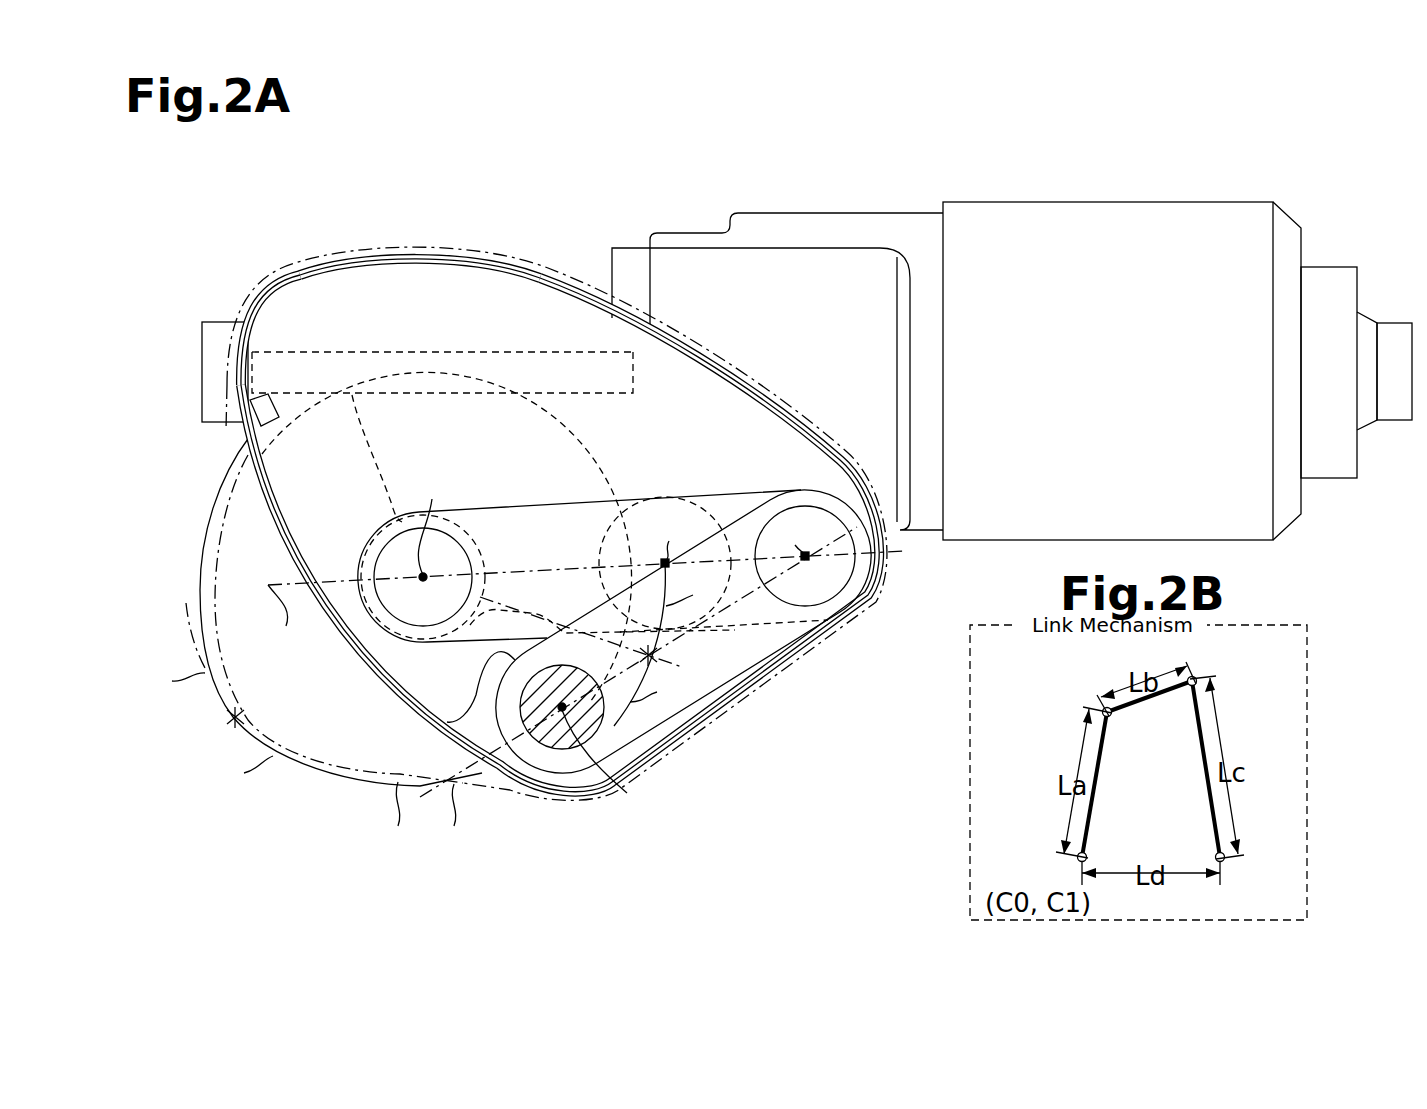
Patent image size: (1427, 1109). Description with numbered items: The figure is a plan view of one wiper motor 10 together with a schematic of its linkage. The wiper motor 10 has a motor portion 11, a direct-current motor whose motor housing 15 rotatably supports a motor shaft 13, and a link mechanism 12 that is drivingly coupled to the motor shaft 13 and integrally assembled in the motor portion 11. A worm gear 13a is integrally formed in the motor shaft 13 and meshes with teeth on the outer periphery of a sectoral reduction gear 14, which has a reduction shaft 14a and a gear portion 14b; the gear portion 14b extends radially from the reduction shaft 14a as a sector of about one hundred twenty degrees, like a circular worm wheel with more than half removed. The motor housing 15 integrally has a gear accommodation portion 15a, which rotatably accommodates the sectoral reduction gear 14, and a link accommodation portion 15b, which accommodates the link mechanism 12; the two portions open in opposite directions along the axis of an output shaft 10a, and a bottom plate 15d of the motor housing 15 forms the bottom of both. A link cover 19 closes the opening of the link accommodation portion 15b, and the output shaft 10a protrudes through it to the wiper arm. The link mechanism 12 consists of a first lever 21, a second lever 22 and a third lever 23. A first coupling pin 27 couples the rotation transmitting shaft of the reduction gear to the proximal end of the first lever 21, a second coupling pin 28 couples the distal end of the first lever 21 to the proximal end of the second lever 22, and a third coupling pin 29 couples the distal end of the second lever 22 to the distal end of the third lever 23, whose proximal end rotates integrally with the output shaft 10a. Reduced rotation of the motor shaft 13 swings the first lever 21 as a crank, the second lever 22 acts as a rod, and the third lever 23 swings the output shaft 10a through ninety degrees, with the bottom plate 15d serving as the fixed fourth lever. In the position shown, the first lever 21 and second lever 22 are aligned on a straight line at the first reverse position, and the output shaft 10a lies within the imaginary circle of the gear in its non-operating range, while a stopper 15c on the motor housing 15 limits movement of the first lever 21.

In FIG. 2A, the wiper motor 10 is at (410, 178).
In FIG. 2A, the output shaft 10a is at (553, 748).
In FIG. 2B, the output shaft 10a is at (1226, 862).
In FIG. 2A, the motor portion 11 is at (1035, 202).
In FIG. 2A, the link mechanism 12 is at (749, 432).
In FIG. 2A, the motor shaft 13 is at (573, 352).
In FIG. 2A, the worm gear 13a is at (402, 352).
In FIG. 2A, the sectoral reduction gear 14 is at (362, 432).
In FIG. 2A, the reduction shaft 14a is at (388, 536).
In FIG. 2A, the gear portion 14b is at (582, 434).
In FIG. 2A, the motor housing 15 is at (539, 501).
In FIG. 2A, the gear accommodation portion 15a is at (367, 782).
In FIG. 2A, the link accommodation portion 15b is at (338, 292).
In FIG. 2A, the stopper 15c is at (272, 398).
In FIG. 2A, the bottom plate 15d is at (287, 322).
In FIG. 2A, the link cover 19 is at (462, 253).
In FIG. 2A, the first lever 21 is at (557, 505).
In FIG. 2B, the first lever 21 is at (1106, 764).
In FIG. 2A, the second lever 22 is at (736, 495).
In FIG. 2B, the second lever 22 is at (1142, 700).
In FIG. 2A, the third lever 23 is at (737, 660).
In FIG. 2B, the third lever 23 is at (1205, 770).
In FIG. 2A, the first coupling pin 27 is at (468, 549).
In FIG. 2B, the first coupling pin 27 is at (1075, 862).
In FIG. 2A, the second coupling pin 28 is at (692, 503).
In FIG. 2B, the second coupling pin 28 is at (1102, 708).
In FIG. 2A, the third coupling pin 29 is at (812, 507).
In FIG. 2B, the third coupling pin 29 is at (1198, 678).